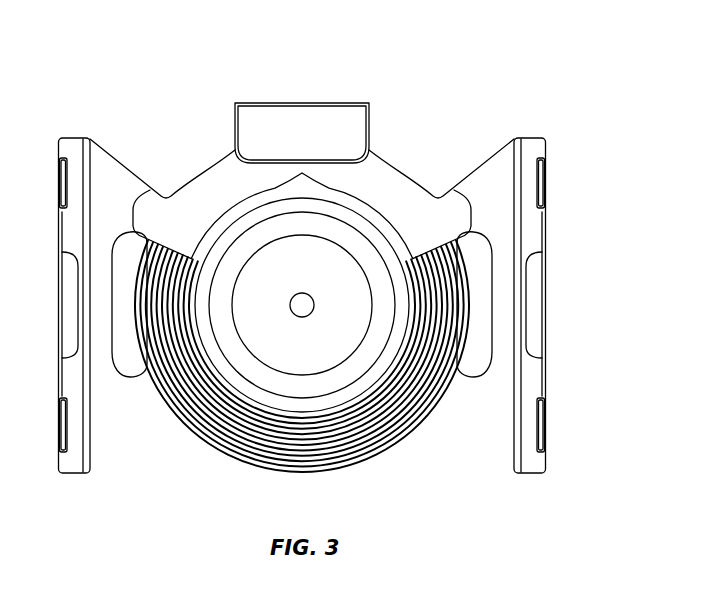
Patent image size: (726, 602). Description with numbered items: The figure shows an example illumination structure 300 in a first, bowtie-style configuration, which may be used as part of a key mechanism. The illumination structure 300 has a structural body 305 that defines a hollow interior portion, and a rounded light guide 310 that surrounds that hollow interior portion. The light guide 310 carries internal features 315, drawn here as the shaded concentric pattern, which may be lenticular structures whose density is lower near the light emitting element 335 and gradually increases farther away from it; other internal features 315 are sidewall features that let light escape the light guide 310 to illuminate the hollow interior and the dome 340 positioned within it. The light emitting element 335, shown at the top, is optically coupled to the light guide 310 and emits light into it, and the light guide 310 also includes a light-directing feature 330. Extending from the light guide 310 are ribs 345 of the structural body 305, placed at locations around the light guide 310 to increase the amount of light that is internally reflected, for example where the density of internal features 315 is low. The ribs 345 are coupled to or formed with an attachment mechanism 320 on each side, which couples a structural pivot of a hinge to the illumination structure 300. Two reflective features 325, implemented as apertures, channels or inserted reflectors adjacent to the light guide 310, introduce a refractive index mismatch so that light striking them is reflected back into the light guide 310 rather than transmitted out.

The illumination structure 300 is at (101, 81).
The structural body 305 is at (497, 146).
The light guide 310 is at (410, 428).
The internal features 315 is at (237, 453).
The attachment mechanism 320 is at (546, 305).
The reflective features 325 is at (150, 190).
The light-directing feature 330 is at (320, 186).
The light emitting element 335 is at (250, 102).
The dome 340 is at (302, 413).
The ribs 345 is at (447, 189).